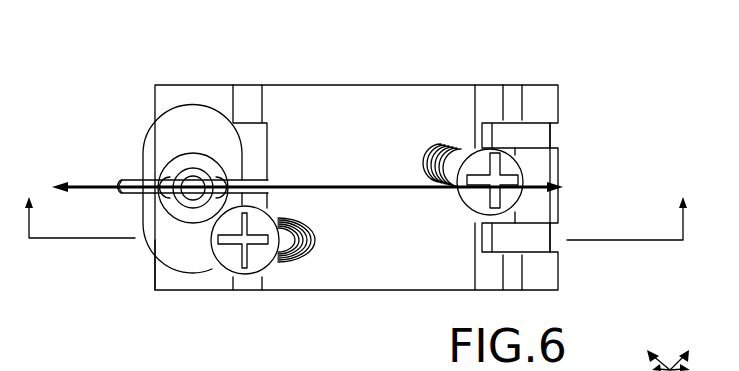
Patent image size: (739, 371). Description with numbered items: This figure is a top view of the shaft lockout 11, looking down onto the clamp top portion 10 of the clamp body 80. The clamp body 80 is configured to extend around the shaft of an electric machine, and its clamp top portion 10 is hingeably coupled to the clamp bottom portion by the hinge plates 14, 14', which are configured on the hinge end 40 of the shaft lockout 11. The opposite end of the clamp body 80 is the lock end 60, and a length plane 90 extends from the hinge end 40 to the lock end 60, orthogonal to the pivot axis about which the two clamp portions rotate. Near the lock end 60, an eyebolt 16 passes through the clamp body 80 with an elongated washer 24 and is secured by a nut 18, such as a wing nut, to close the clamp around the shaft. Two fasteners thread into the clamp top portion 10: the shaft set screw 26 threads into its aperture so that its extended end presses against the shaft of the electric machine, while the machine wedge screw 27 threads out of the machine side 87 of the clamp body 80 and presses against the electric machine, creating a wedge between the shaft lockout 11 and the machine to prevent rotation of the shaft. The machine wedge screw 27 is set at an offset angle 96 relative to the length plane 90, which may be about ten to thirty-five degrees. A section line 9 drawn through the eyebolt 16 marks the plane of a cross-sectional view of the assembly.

The section line 9- 9 is at (357, 201).
The clamp top portion 10 is at (360, 103).
The shaft lockout 11 is at (138, 78).
The hinge plate 14 is at (557, 251).
The hinge plate 14' is at (557, 130).
The eyebolt 16 is at (193, 187).
The nut 18 is at (167, 170).
The elongated washer 24 is at (160, 140).
The shaft set screw 26 is at (254, 262).
The machine wedge screw 27 is at (507, 195).
The hinge end 40 is at (540, 215).
The lock end 60 is at (153, 275).
The clamp body 80 is at (443, 120).
The machine side 87 is at (468, 85).
The length plane 90 is at (74, 182).
The offset angle 96 is at (672, 368).